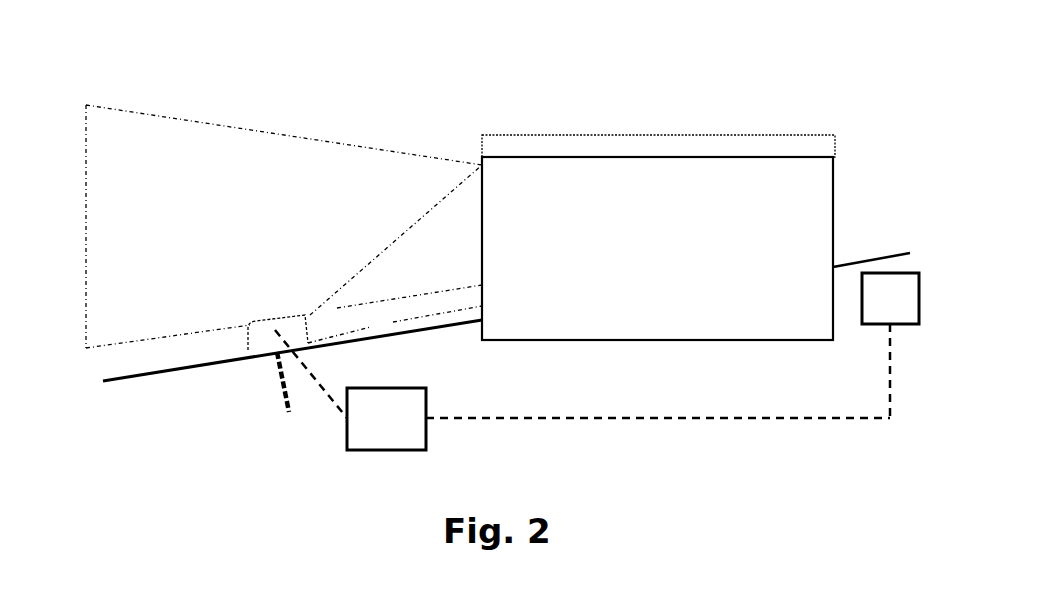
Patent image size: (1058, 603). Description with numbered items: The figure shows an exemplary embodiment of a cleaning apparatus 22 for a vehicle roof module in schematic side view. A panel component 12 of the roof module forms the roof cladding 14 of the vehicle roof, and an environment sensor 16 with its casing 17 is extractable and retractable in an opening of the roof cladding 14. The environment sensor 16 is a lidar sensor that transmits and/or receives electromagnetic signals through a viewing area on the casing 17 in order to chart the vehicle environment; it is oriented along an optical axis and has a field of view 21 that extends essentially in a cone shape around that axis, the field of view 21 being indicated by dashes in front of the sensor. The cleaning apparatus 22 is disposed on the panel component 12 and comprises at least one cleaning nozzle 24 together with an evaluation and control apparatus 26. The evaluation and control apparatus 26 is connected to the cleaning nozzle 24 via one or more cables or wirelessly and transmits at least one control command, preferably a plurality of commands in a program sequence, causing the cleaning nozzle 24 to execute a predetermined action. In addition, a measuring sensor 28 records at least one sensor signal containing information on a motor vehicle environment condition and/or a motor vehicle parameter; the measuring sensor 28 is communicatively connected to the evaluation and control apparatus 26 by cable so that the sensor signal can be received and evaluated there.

The panel component 12 is at (157, 372).
The roof cladding 14 is at (885, 255).
The environment sensor 16 is at (666, 264).
The casing 17 is at (604, 157).
The field of view 21 is at (276, 133).
The cleaning apparatus 22 is at (257, 381).
The cleaning nozzle 24 is at (265, 345).
The evaluation and control apparatus 26 is at (399, 430).
The measuring sensor 28 is at (903, 311).